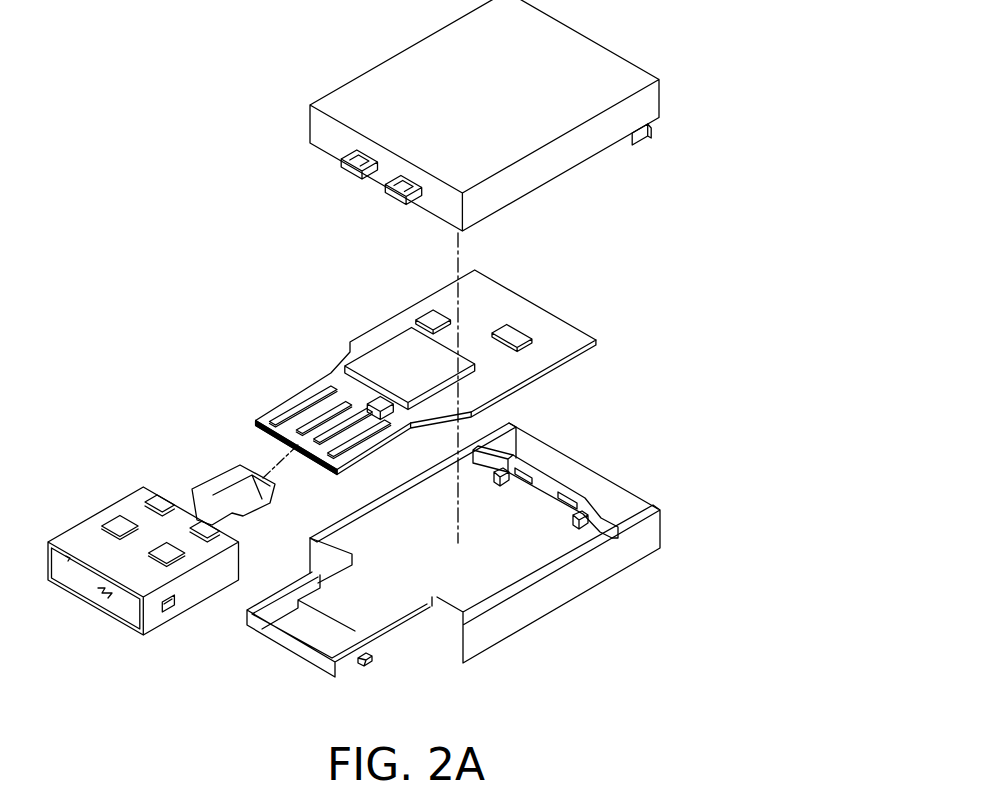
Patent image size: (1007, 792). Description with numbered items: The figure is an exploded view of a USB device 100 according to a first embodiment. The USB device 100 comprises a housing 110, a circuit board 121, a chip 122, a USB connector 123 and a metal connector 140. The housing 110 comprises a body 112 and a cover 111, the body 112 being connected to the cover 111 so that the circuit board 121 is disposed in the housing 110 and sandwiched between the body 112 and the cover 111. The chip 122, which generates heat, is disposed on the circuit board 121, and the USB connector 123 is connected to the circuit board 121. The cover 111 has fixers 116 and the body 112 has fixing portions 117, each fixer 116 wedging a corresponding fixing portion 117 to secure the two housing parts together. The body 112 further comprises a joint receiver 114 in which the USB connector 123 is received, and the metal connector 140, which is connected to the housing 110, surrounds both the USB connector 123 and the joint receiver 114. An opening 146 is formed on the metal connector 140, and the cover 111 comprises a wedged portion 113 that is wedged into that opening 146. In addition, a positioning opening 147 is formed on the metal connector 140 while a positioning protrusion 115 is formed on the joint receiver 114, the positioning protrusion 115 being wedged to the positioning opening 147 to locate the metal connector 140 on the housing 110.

The USB device 100 is at (146, 43).
The housing 110 is at (776, 45).
The cover 111 is at (583, 58).
The body 112 is at (630, 547).
The wedged portion 113 is at (357, 160).
The joint receiver 114 is at (377, 620).
The positioning protrusion 115 is at (367, 657).
The fixer 116 is at (645, 142).
The fixing portion 117 is at (567, 485).
The circuit board 121 is at (503, 305).
The chip 122 is at (373, 365).
The USB connector 123 is at (293, 413).
The metal connector 140 is at (88, 540).
The opening 146 is at (163, 497).
The positioning opening 147 is at (177, 612).